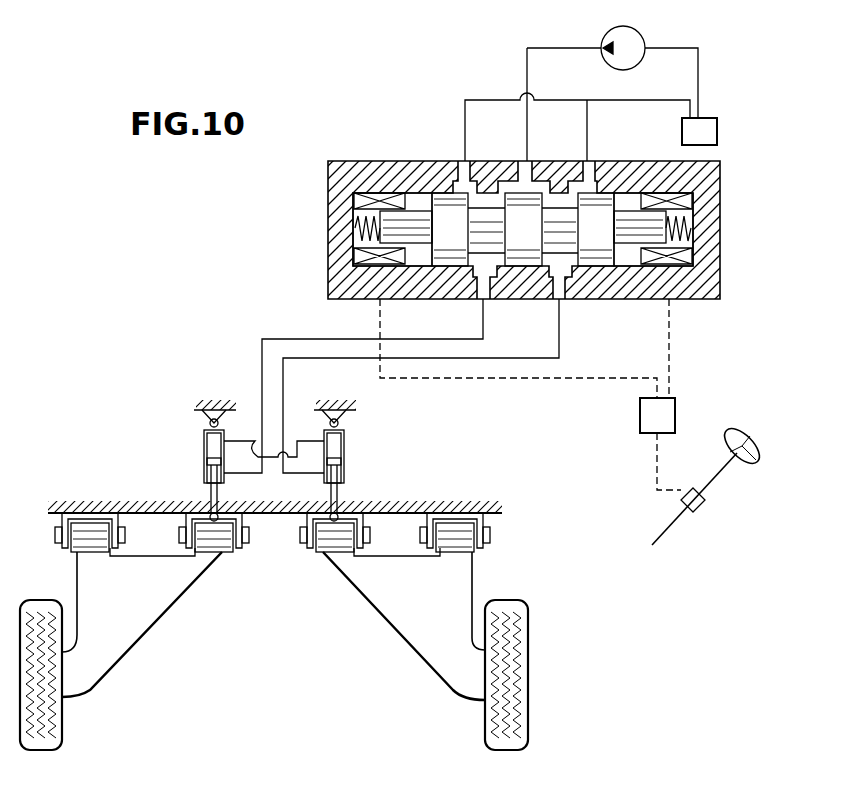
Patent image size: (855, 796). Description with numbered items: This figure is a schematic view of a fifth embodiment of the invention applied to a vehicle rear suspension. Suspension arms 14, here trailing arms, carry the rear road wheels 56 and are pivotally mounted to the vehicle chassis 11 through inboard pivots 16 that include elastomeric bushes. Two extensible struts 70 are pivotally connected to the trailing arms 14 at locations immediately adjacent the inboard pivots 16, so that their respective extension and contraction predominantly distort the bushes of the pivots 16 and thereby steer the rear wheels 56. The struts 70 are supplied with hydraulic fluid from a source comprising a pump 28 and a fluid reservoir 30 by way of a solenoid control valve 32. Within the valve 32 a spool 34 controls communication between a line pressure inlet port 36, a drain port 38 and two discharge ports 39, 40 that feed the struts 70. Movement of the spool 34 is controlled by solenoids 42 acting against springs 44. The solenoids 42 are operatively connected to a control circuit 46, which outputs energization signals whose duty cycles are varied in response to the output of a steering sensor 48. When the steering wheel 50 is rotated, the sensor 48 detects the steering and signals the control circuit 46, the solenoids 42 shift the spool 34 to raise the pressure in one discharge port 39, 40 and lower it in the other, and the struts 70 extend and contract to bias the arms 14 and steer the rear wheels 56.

The vehicle chassis 11 is at (80, 500).
The suspension arms 14 is at (122, 650).
The pivots 16 is at (85, 555).
The pump 28 is at (608, 36).
The fluid reservoir 30 is at (706, 124).
The solenoid control valve 32 is at (360, 148).
The spool 34 is at (440, 200).
The line pressure inlet port 36 is at (522, 161).
The drain port 38 is at (462, 170).
The discharge port 39 is at (480, 300).
The discharge port 40 is at (557, 300).
The solenoids 42 is at (355, 200).
The springs 44 is at (358, 228).
The control circuit 46 is at (642, 420).
The steering sensor 48 is at (683, 500).
The steering wheel 50 is at (746, 468).
The rear road wheels 56 is at (62, 742).
The extensible struts 70 is at (204, 460).